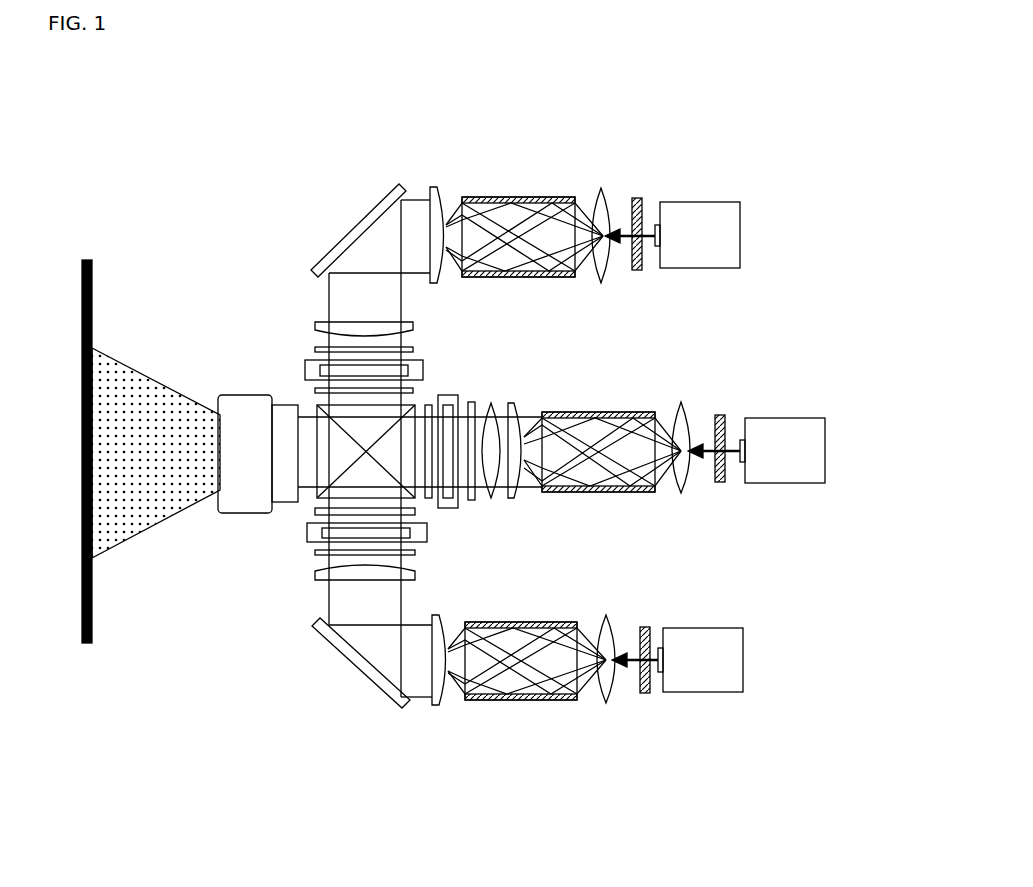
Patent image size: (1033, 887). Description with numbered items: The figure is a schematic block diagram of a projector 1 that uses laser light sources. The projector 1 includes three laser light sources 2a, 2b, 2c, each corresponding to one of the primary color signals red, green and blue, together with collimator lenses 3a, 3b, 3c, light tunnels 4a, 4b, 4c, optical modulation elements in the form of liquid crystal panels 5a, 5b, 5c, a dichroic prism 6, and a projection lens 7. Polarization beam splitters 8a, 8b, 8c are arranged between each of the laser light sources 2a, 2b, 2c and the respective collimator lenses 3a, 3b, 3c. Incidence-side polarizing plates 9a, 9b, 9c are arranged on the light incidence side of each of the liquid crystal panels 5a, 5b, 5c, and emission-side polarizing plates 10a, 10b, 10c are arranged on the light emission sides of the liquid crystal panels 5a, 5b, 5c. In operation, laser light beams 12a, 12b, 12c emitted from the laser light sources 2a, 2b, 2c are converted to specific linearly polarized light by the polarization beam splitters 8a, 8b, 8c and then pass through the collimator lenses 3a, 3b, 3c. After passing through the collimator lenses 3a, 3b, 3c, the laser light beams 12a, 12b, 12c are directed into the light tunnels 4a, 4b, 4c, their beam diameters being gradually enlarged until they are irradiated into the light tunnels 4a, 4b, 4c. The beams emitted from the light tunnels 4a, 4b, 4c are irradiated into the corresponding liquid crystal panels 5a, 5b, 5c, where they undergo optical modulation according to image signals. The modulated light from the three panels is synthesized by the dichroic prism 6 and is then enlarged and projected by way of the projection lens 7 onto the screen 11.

The projector 1 is at (148, 144).
The laser light source 2a is at (756, 419).
The laser light source 2b is at (689, 200).
The laser light source 2c is at (698, 695).
The collimator lens 3a is at (709, 424).
The collimator lens 3b is at (626, 207).
The collimator lens 3c is at (636, 689).
The light tunnel 4a is at (602, 424).
The light tunnel 4b is at (516, 207).
The light tunnel 4c is at (519, 689).
The liquid crystal panel 5a is at (464, 413).
The liquid crystal panel 5b is at (326, 344).
The liquid crystal panel 5c is at (331, 557).
The dichroic prism 6 is at (393, 477).
The projection lens 7 is at (231, 426).
The polarization beam splitter 8a is at (750, 419).
The polarization beam splitter 8b is at (670, 201).
The polarization beam splitter 8c is at (677, 695).
The incidence-side polarizing plate 9a is at (494, 409).
The incidence-side polarizing plate 9b is at (321, 317).
The incidence-side polarizing plate 9c is at (325, 584).
The emission-side polarizing plate 10a is at (441, 408).
The emission-side polarizing plate 10b is at (318, 364).
The emission-side polarizing plate 10c is at (319, 536).
The screen 11 is at (114, 469).
The laser light beam 12a is at (768, 487).
The laser light beam 12b is at (682, 274).
The laser light beam 12c is at (687, 625).